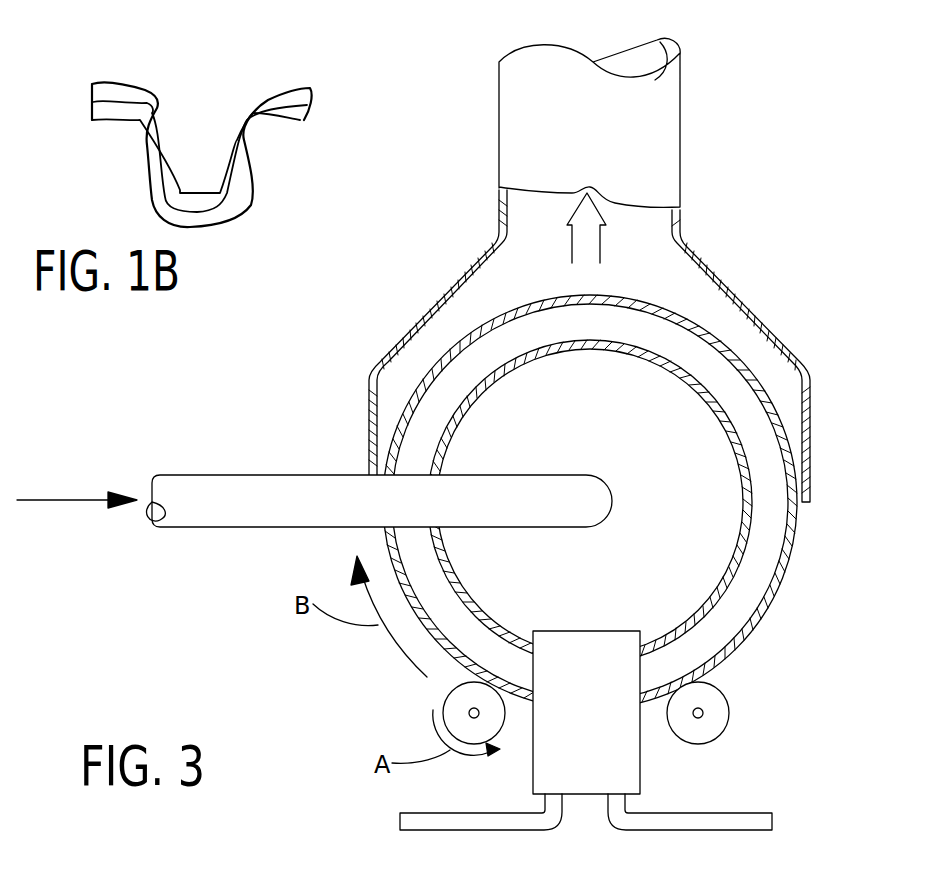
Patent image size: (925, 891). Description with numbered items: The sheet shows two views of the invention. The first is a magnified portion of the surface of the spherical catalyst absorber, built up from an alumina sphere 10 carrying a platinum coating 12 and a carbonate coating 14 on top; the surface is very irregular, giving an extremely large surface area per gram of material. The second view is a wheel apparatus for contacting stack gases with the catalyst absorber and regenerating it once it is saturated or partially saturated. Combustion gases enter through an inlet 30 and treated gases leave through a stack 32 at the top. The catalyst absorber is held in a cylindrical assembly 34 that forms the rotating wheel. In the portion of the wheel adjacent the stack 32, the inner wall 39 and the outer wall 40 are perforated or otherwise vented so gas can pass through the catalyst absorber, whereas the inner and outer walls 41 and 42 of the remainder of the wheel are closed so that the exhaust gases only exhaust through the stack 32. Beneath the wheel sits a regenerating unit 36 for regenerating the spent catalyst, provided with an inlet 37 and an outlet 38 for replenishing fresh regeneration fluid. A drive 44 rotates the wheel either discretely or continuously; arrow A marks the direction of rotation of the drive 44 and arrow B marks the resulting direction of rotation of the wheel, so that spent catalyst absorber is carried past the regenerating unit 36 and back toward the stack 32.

In FIG. 1B, the alumina sphere 10 is at (240, 222).
In FIG. 1B, the platinum coating 12 is at (237, 137).
In FIG. 1B, the carbonate coating 14 is at (223, 130).
In FIG. 3, the inlet 30 is at (307, 487).
In FIG. 3, the stack 32 is at (595, 145).
In FIG. 3, the cylindrical assembly 34 is at (797, 437).
In FIG. 3, the regenerating unit 36 is at (606, 722).
In FIG. 3, the inlet 37 is at (483, 830).
In FIG. 3, the outlet 38 is at (662, 830).
In FIG. 3, the inner wall 39 is at (690, 373).
In FIG. 3, the outer wall 40 is at (662, 303).
In FIG. 3, the inner wall 41 is at (723, 592).
In FIG. 3, the outer wall 42 is at (735, 648).
In FIG. 3, the drive 44 is at (447, 700).